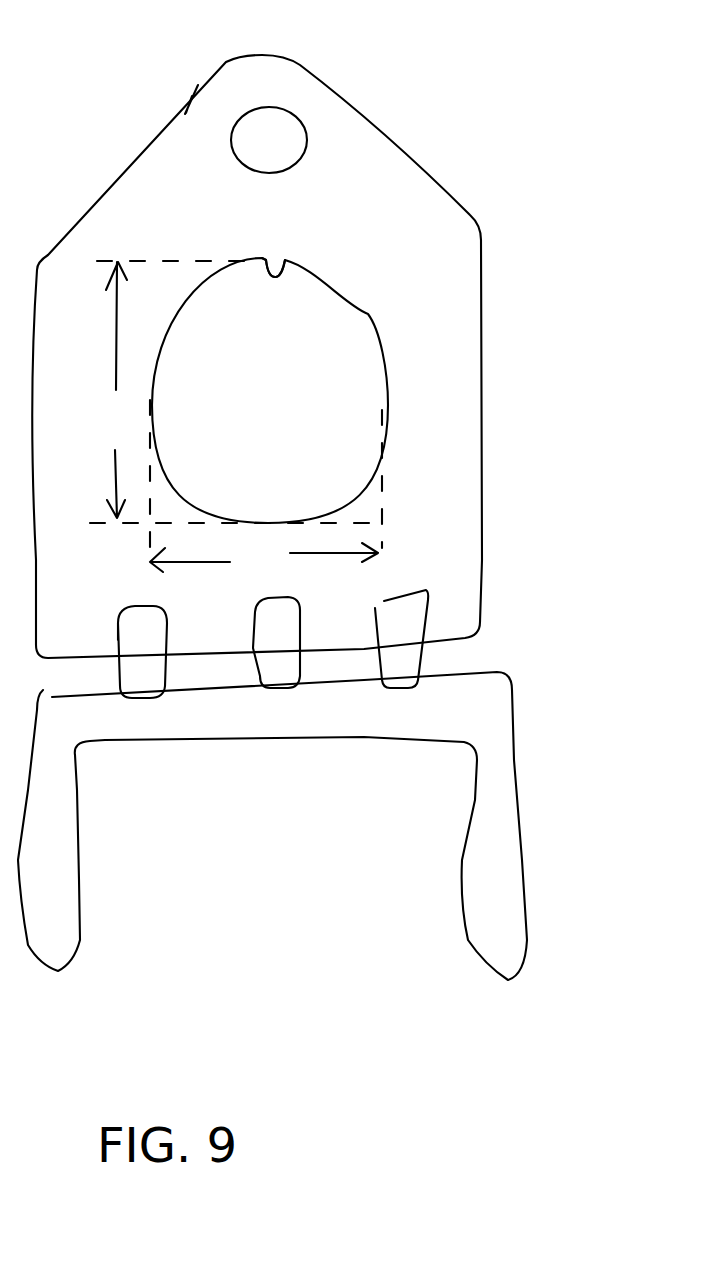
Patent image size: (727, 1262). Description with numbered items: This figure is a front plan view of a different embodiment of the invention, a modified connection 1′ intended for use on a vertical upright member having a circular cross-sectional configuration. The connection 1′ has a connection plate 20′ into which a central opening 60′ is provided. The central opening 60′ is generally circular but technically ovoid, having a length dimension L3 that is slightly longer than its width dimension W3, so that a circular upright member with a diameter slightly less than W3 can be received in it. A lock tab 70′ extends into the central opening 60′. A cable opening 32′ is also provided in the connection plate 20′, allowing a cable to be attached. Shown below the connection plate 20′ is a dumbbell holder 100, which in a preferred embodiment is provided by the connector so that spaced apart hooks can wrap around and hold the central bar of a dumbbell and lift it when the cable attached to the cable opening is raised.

The connection 1′ is at (329, 355).
The connection plate 20′ is at (447, 452).
The cable opening 32′ is at (290, 131).
The central opening 60′ is at (303, 353).
The lock tab 70′ is at (287, 268).
The dumbbell holder 100 is at (533, 727).